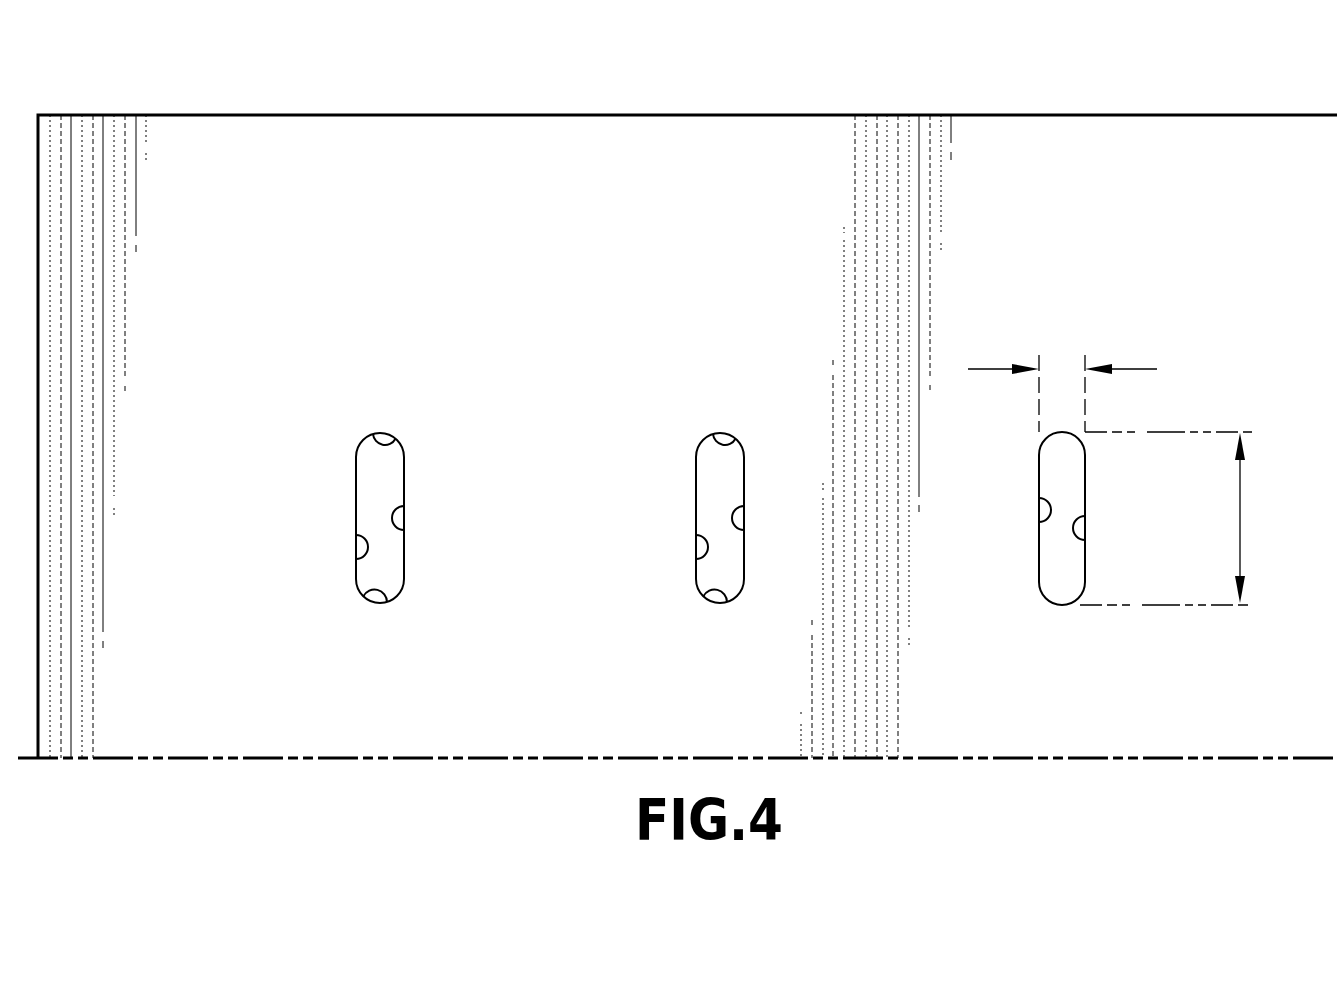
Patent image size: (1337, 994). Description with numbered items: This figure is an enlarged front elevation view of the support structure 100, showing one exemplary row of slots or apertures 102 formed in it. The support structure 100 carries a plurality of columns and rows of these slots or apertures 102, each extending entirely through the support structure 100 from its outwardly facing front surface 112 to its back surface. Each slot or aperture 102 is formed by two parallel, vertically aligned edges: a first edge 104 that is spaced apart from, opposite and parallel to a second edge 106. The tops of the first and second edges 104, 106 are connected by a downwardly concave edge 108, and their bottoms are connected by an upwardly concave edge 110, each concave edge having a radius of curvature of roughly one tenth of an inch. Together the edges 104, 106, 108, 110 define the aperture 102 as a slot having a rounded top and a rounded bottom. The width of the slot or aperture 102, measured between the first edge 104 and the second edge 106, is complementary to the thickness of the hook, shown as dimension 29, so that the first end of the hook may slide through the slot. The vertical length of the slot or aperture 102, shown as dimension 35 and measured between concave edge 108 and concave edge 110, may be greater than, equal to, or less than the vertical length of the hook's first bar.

The support structure 100 is at (241, 90).
The outwardly facing front surface 112 is at (588, 276).
The slot or aperture 102 is at (352, 508).
The first edge 104 is at (358, 560).
The second edge 106 is at (404, 530).
The downwardly concave edge 108 is at (403, 438).
The upwardly concave edge 110 is at (359, 591).
The dimension 29 is at (1133, 368).
The dimension 35 is at (1240, 518).